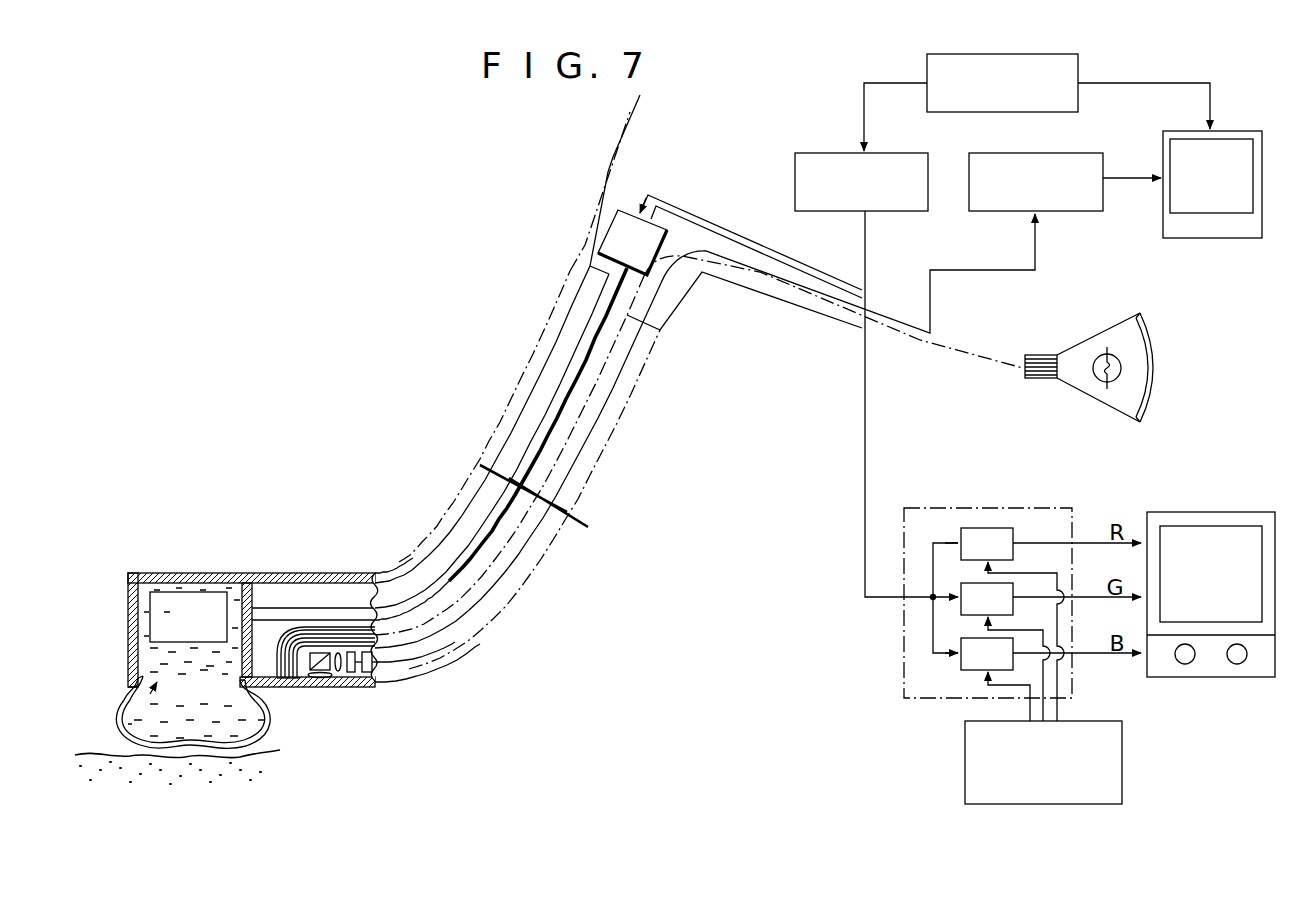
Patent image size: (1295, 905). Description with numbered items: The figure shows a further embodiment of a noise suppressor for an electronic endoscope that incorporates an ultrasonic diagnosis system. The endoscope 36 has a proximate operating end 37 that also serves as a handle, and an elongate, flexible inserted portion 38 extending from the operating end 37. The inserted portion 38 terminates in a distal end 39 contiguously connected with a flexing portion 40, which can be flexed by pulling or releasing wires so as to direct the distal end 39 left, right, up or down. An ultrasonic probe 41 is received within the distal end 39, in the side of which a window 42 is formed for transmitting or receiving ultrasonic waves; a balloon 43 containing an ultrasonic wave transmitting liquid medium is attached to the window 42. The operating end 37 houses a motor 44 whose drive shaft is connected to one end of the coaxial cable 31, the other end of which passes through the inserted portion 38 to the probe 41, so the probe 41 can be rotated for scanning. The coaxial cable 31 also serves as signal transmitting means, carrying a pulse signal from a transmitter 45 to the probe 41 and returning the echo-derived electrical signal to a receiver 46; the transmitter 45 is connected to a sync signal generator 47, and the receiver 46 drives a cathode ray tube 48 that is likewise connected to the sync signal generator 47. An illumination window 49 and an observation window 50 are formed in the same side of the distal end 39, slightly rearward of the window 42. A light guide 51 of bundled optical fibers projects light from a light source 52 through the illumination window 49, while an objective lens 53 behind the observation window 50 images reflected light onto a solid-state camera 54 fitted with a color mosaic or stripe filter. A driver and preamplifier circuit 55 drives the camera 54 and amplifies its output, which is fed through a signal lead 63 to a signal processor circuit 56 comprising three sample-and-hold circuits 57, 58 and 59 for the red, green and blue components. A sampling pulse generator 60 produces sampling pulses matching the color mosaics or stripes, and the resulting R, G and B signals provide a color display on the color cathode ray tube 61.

The coaxial cable 31 is at (548, 413).
The endoscope 36 is at (512, 345).
The proximate operating end 37 is at (612, 156).
The inserted portion 38 is at (567, 318).
The distal end 39 is at (232, 573).
The flexing portion 40 is at (462, 530).
The ultrasonic probe 41 is at (185, 600).
The window 42 is at (138, 690).
The balloon bag 43 is at (120, 720).
The motor 44 is at (613, 232).
The transmitter 45 is at (820, 157).
The receiver 46 is at (1003, 158).
The sync signal generator 47 is at (933, 65).
The cathode ray tube 48 is at (1185, 143).
The illumination window 49 is at (280, 684).
The observation window 50 is at (322, 678).
The light guide 51 is at (299, 632).
The light source 52 is at (1112, 389).
The objective lens 53 is at (320, 672).
The solid-state camera 54 is at (351, 673).
The driver and preamplifier circuit 55 is at (368, 673).
The signal processor circuit 56 is at (960, 508).
The sample-and-hold circuit 57 is at (962, 532).
The sample-and-hold circuit 58 is at (1008, 603).
The sample-and-hold circuit 59 is at (970, 660).
The sampling pulse generator 60 is at (1108, 730).
The color cathode ray tube 61 is at (1192, 535).
The signal lead 63 is at (865, 495).